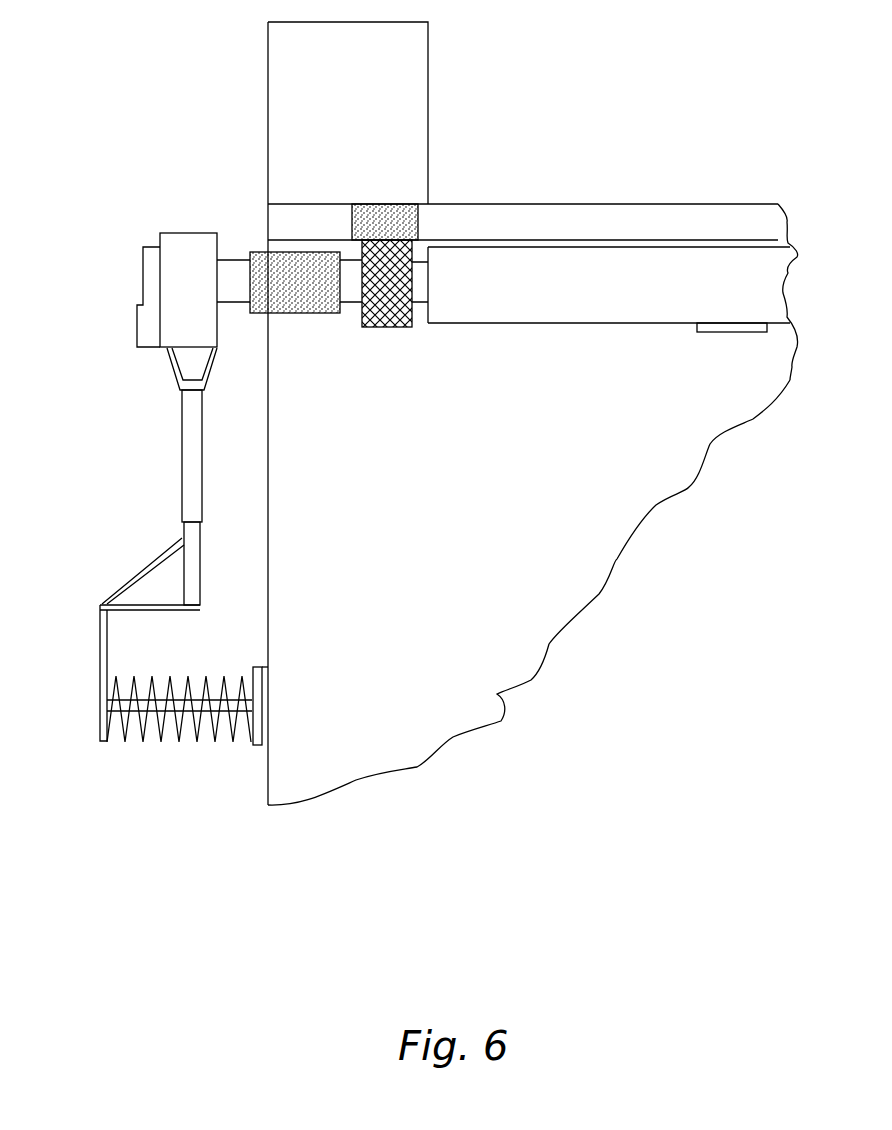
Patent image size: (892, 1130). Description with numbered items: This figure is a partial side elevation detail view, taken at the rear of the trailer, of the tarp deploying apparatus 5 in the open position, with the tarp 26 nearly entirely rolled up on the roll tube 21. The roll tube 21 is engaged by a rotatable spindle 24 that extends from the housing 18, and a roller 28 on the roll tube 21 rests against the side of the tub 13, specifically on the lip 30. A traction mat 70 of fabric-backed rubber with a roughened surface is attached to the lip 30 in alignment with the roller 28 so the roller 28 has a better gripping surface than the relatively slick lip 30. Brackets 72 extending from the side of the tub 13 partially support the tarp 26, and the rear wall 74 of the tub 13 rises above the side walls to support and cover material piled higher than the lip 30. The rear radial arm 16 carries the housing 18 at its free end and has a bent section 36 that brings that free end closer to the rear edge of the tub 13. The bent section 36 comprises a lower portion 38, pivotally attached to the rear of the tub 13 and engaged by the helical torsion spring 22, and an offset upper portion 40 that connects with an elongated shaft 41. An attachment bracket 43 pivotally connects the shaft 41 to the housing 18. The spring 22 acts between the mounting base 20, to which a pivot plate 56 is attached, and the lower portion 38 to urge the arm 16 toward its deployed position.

The tarp deploying apparatus 5 is at (112, 131).
The tub 13 is at (601, 514).
The rear radial arm 16 is at (175, 455).
The housing 18 is at (162, 235).
The mounting base 20 is at (265, 743).
The roll tube 21 is at (350, 305).
The helical torsion spring 22 is at (112, 740).
The rotatable spindle 24 is at (237, 262).
The tarp 26 is at (290, 313).
The roller 28 is at (403, 327).
The lip 30 is at (560, 222).
The bent section 36 is at (200, 607).
The lower portion 38 is at (102, 605).
The upper portion 40 is at (200, 558).
The elongated shaft 41 is at (202, 438).
The attachment bracket 43 is at (172, 362).
The pivot plate 56 is at (262, 667).
The traction mat 70 is at (400, 203).
The bracket 72 is at (713, 332).
The rear wall 74 is at (422, 73).